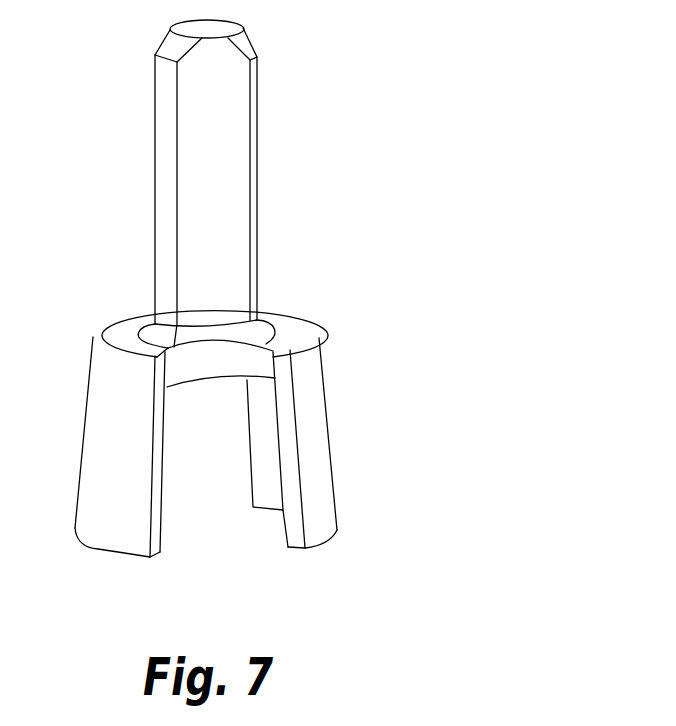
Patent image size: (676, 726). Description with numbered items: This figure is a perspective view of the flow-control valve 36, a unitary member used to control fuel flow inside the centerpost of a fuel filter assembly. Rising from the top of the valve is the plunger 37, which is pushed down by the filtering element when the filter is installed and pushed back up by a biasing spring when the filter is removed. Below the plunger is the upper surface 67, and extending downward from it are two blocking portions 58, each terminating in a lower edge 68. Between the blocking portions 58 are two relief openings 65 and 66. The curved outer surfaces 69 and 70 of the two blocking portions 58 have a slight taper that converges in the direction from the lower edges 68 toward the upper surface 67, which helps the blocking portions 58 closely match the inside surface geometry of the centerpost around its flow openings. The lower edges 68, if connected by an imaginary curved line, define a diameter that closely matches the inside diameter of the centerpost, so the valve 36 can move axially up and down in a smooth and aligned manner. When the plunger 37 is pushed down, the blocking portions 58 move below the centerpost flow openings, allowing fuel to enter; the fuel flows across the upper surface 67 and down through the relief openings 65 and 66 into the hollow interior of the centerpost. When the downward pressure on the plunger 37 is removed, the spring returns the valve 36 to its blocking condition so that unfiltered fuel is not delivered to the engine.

The flow-control valve 36 is at (212, 322).
The plunger 37 is at (221, 98).
The blocking portions 58 is at (212, 480).
The relief opening 65 is at (249, 341).
The relief opening 66 is at (142, 292).
The upper surface 67 is at (234, 315).
The lower edges 68 is at (87, 545).
The curved outer surface 69 is at (322, 525).
The curved outer surface 70 is at (128, 508).